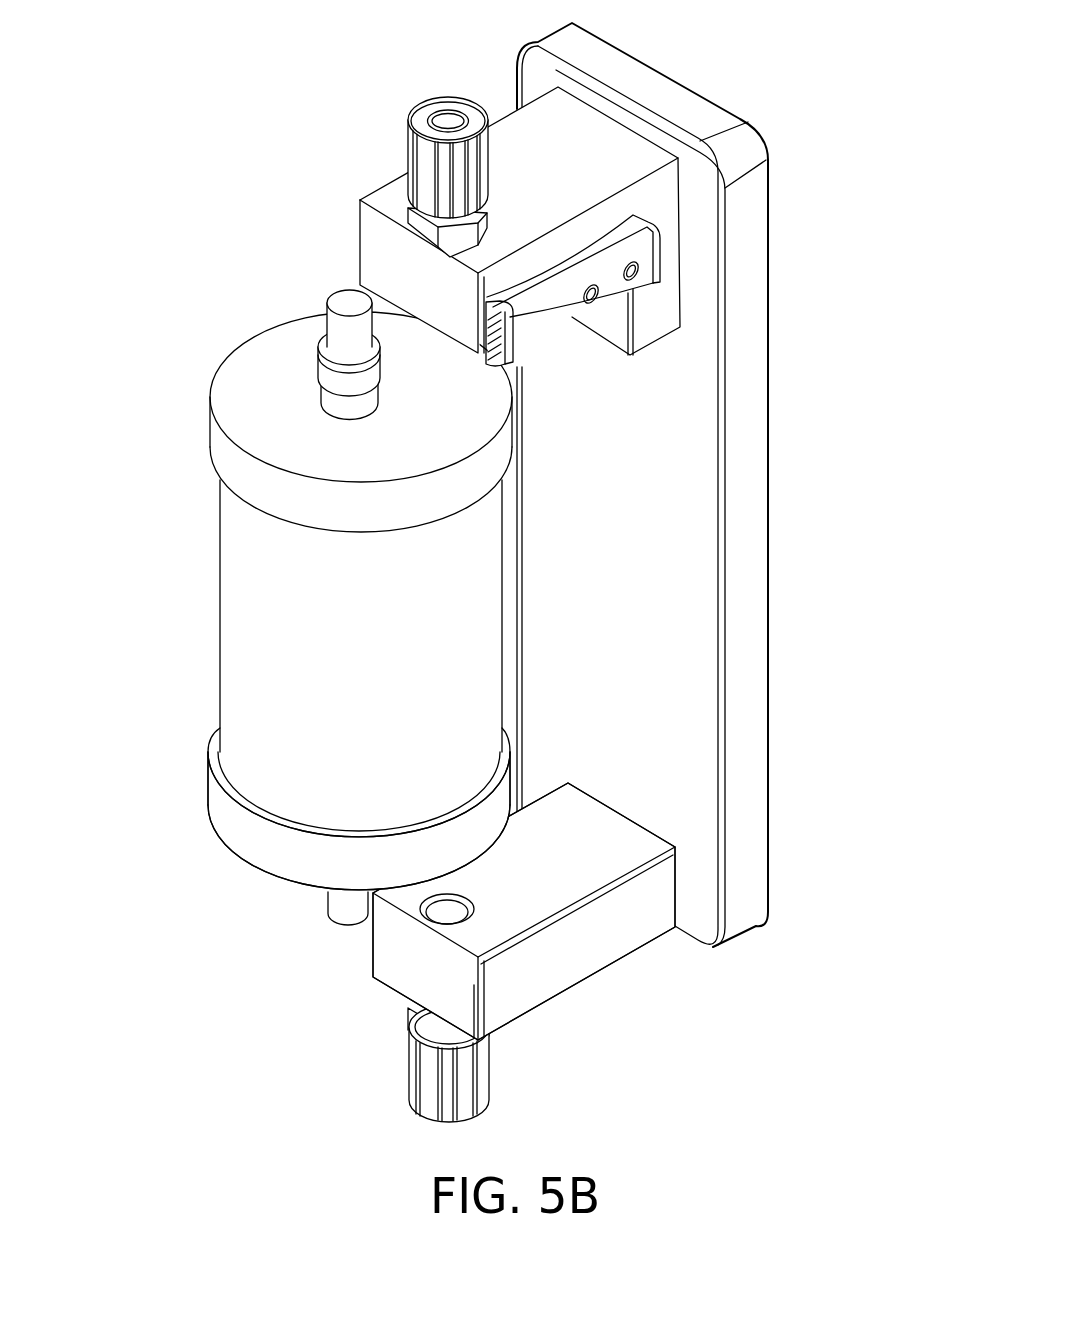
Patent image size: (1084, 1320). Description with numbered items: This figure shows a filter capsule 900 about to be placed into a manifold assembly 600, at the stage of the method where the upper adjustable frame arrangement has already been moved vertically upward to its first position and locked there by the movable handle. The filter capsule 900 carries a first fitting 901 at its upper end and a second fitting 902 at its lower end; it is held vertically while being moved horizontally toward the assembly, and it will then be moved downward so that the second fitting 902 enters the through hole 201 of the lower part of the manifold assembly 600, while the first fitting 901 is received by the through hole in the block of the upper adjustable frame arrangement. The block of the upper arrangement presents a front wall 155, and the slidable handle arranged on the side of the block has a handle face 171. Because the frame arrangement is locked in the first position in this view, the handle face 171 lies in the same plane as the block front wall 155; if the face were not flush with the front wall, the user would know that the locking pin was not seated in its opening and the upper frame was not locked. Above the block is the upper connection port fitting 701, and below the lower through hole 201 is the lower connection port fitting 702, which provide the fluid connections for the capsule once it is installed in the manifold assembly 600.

The manifold assembly 600 is at (165, 60).
The upper connection port fitting 701 is at (410, 143).
The front wall 155 is at (377, 257).
The first fitting 901 is at (343, 342).
The filter capsule 900 is at (265, 597).
The handle face 171 is at (491, 364).
The second fitting 902 is at (342, 908).
The through hole 201 is at (445, 916).
The lower connection port fitting 702 is at (412, 1076).